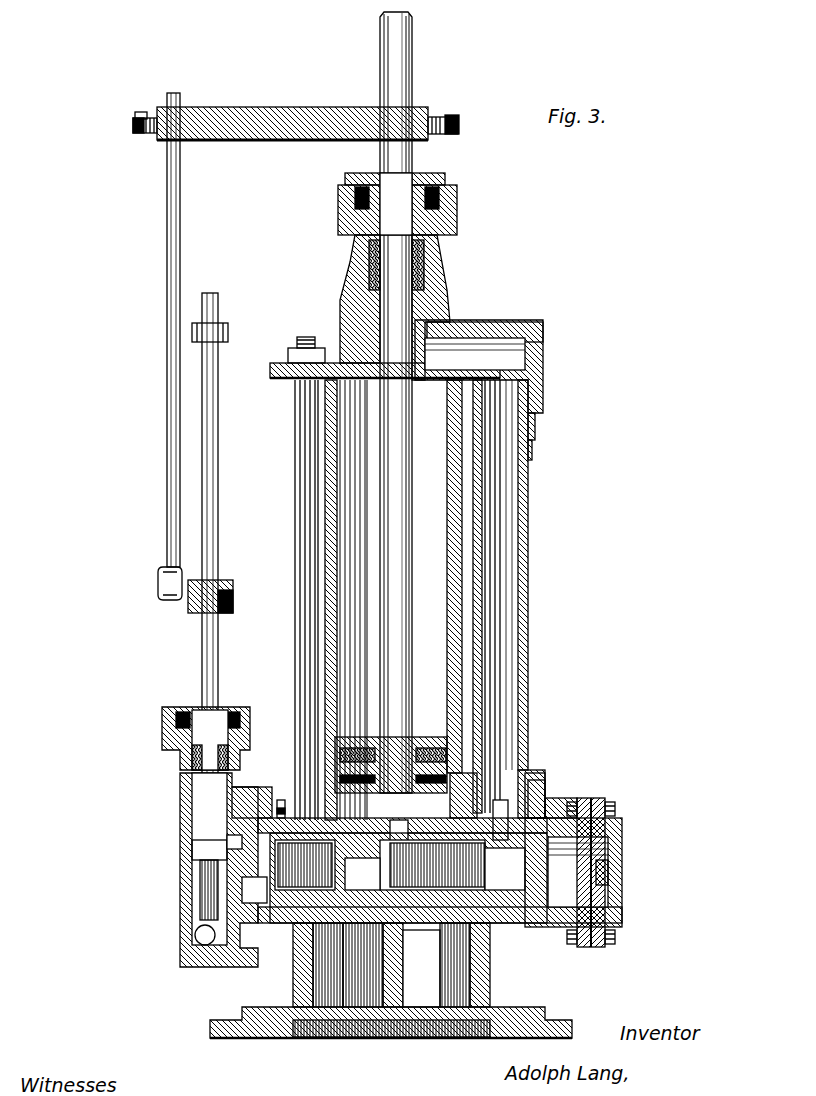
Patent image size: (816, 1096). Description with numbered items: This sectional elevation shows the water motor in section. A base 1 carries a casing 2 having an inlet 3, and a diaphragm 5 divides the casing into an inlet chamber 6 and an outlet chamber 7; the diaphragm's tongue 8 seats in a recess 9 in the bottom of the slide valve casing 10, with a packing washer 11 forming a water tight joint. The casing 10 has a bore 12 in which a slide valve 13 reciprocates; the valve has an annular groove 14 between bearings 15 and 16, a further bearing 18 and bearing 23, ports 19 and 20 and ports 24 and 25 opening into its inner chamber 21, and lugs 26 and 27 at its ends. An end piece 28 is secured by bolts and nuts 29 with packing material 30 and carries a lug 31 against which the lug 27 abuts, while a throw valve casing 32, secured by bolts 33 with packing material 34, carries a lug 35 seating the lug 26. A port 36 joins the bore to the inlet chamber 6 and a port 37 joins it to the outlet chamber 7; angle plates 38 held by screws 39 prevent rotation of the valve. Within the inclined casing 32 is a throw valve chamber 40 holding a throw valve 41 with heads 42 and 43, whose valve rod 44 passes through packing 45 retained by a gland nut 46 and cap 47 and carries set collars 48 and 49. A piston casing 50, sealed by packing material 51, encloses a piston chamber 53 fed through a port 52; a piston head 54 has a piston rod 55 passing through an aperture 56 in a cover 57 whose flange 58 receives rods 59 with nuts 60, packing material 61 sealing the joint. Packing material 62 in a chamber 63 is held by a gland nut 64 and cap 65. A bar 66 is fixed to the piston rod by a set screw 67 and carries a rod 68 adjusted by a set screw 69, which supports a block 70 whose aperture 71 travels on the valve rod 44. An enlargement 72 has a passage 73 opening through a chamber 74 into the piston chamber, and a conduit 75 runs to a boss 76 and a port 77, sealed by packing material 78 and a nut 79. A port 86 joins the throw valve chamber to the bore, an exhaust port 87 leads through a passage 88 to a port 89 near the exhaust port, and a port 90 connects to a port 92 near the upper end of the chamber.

The base 1 is at (545, 1012).
The casing 2 is at (490, 980).
The inlet 3 is at (410, 975).
The diaphragm 5 is at (385, 1037).
The inlet chamber 6 is at (421, 968).
The outlet chamber 7 is at (328, 965).
The tongue 8 is at (408, 930).
The recess 9 is at (422, 933).
The slide valve casing 10 is at (535, 923).
The packing washer 11 is at (515, 923).
The bore 12 is at (568, 886).
The slide valve 13 is at (540, 818).
The annular groove 14 is at (455, 965).
The bearing 15 is at (538, 790).
The bearing 16 is at (402, 813).
The bearing 18 is at (562, 800).
The port 19 is at (505, 867).
The port 20 is at (502, 876).
The inner chamber 21 is at (408, 878).
The bearing 23 is at (264, 918).
The port 24 is at (348, 853).
The port 25 is at (305, 865).
The lug 26 is at (255, 948).
The lug 27 is at (578, 872).
The end piece 28 is at (622, 836).
The bolts and nuts 29 is at (615, 808).
The packing material 30 is at (592, 800).
The lug 31 is at (608, 870).
The throw valve casing 32 is at (185, 775).
The bolts 33 is at (281, 800).
The packing material 34 is at (262, 790).
The lug 35 is at (225, 967).
The port 36 is at (520, 955).
The port 37 is at (363, 965).
The angle plates 38 is at (265, 948).
The screws 39 is at (277, 988).
The throw valve chamber 40 is at (185, 812).
The throw valve 41 is at (200, 900).
The head 42 is at (196, 935).
The head 43 is at (205, 850).
The valve rod 44 is at (218, 444).
The packing 45 is at (185, 760).
The gland nut 46 is at (226, 712).
The cap 47 is at (162, 740).
The set collar 48 is at (233, 604).
The set collar 49 is at (220, 326).
The piston casing 50 is at (328, 627).
The packing material 51 is at (470, 800).
The port 52 is at (400, 824).
The piston chamber 53 is at (441, 576).
The piston head 54 is at (416, 740).
The piston rod 55 is at (380, 58).
The aperture 56 is at (442, 300).
The cover 57 is at (349, 284).
The flange 58 is at (275, 378).
The rods 59 is at (300, 496).
The nuts 60 is at (300, 358).
The packing material 61 is at (450, 396).
The packing material 62 is at (430, 262).
The chamber 63 is at (428, 278).
The gland nut 64 is at (440, 176).
The cap 65 is at (457, 212).
The bar 66 is at (268, 118).
The set screw 67 is at (459, 122).
The rod 68 is at (167, 222).
The set screw 69 is at (133, 124).
The block 70 is at (158, 585).
The aperture 71 is at (226, 584).
The enlargement 72 is at (543, 328).
The passage 73 is at (492, 340).
The chamber 74 is at (440, 332).
The conduit 75 is at (526, 593).
The boss 76 is at (533, 790).
The port 77 is at (506, 813).
The packing material 78 is at (535, 392).
The nut 79 is at (532, 447).
The port 86 is at (230, 840).
The exhaust port 87 is at (210, 870).
The passage 88 is at (205, 886).
The port 89 is at (363, 874).
The port 90 is at (190, 945).
The port 92 is at (205, 795).